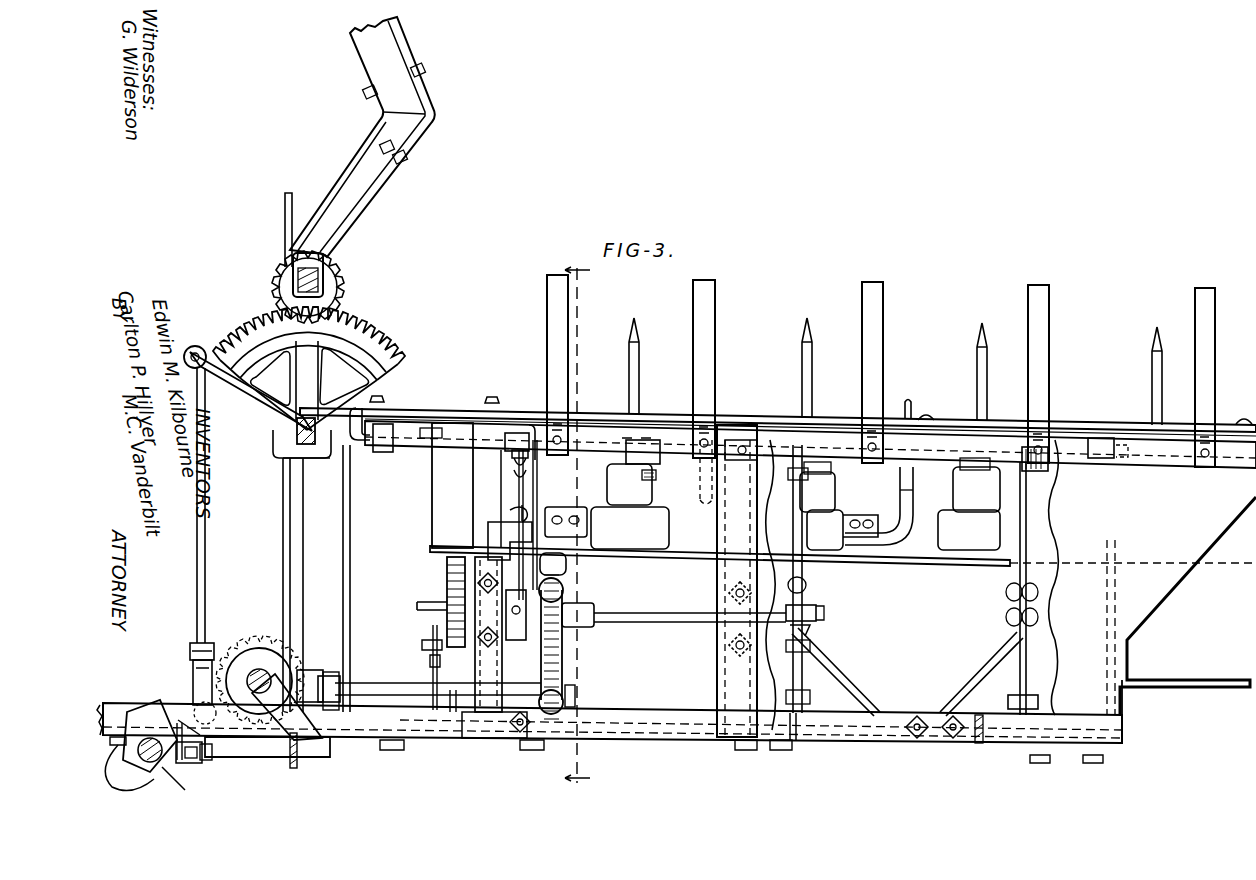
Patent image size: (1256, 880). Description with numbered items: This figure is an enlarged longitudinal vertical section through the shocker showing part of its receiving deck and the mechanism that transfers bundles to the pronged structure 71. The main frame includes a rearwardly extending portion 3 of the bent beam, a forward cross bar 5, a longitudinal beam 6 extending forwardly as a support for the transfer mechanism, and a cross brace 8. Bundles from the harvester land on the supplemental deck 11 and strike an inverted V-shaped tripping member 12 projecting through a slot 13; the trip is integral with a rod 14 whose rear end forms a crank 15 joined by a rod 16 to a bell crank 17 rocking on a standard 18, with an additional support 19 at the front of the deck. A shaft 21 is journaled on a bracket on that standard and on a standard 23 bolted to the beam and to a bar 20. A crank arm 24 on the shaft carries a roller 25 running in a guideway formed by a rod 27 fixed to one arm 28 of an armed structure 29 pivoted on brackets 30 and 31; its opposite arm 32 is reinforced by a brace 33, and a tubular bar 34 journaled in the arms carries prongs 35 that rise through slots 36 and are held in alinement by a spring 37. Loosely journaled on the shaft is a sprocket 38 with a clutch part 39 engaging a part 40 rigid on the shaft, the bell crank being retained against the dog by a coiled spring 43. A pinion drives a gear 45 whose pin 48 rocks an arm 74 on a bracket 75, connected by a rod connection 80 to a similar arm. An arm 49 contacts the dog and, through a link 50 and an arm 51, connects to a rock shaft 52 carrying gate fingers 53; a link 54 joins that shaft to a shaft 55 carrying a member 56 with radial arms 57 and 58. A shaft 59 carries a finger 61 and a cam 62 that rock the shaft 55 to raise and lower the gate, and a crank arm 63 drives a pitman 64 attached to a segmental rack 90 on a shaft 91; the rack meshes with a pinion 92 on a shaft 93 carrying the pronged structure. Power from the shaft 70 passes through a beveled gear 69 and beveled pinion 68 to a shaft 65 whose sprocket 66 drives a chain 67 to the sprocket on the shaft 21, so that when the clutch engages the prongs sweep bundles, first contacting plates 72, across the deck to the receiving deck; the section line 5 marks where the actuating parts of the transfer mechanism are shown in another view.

The rearwardly extending portion 3 is at (524, 480).
The forward cross bar 5 is at (301, 780).
The longitudinal beam 6 is at (668, 728).
The cross brace 8 is at (978, 745).
The supplemental deck 11 is at (1133, 577).
The tripping member 12 is at (908, 400).
The slot 13 is at (918, 528).
The rod 14 is at (698, 532).
The crank 15 is at (520, 518).
The rod 16 is at (512, 505).
The bell crank 17 is at (490, 525).
The standard 18 is at (501, 467).
The support 19 is at (1108, 440).
The bar 20 is at (938, 428).
The shaft 21 is at (680, 622).
The standard 23 is at (742, 503).
The crank arm 24 is at (820, 612).
The roller 25 is at (792, 618).
The rod 27 is at (804, 580).
The arm 28 is at (808, 641).
The armed structure 29 is at (800, 680).
The bracket 30 is at (800, 740).
The bracket 31 is at (1023, 695).
The arm 32 is at (1018, 575).
The brace 33 is at (985, 672).
The tubular bar 34 is at (668, 442).
The prongs 35 is at (639, 357).
The slots 36 is at (847, 493).
The spring 37 is at (1046, 471).
The sprocket 38 is at (565, 598).
The clutch part 39 is at (528, 640).
The clutch part 40 is at (500, 650).
The coiled spring 43 is at (515, 460).
The gear 45 is at (446, 590).
The pin 48 is at (417, 606).
The arm 49 is at (560, 564).
The link 50 is at (540, 495).
The arm 51 is at (530, 425).
The shaft 52 is at (410, 440).
The fingers 53 is at (547, 311).
The link 54 is at (348, 548).
The shaft 55 is at (283, 757).
The member 56 is at (202, 760).
The radial arm 57 is at (180, 720).
The radial arm 58 is at (185, 720).
The shaft 59 is at (190, 763).
The finger 61 is at (130, 712).
The cam 62 is at (150, 762).
The crank arm 63 is at (165, 700).
The pitman 64 is at (206, 558).
The shaft 65 is at (360, 683).
The sprocket 66 is at (578, 700).
The chain 67 is at (565, 665).
The beveled pinion 68 is at (308, 668).
The beveled gear 69 is at (260, 668).
The power shaft 70 is at (270, 673).
The pronged structure 71 is at (408, 105).
The plates 72 is at (772, 528).
The arm 74 is at (430, 660).
The bracket 75 is at (472, 740).
The rod connection 80 is at (430, 630).
The segmental rack 90 is at (372, 348).
The shaft 91 is at (294, 430).
The pinion 92 is at (342, 291).
The shaft 93 is at (290, 284).